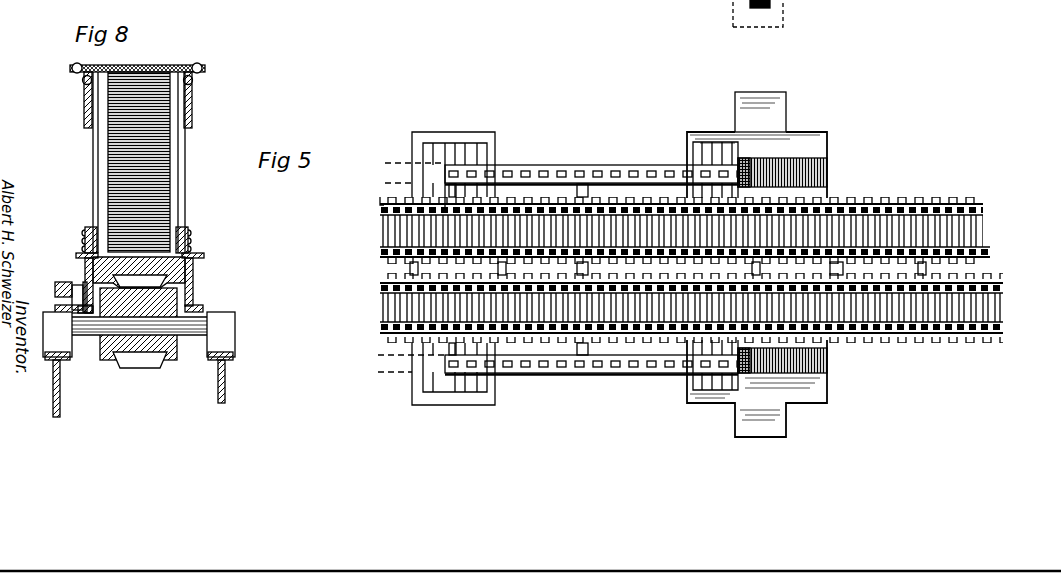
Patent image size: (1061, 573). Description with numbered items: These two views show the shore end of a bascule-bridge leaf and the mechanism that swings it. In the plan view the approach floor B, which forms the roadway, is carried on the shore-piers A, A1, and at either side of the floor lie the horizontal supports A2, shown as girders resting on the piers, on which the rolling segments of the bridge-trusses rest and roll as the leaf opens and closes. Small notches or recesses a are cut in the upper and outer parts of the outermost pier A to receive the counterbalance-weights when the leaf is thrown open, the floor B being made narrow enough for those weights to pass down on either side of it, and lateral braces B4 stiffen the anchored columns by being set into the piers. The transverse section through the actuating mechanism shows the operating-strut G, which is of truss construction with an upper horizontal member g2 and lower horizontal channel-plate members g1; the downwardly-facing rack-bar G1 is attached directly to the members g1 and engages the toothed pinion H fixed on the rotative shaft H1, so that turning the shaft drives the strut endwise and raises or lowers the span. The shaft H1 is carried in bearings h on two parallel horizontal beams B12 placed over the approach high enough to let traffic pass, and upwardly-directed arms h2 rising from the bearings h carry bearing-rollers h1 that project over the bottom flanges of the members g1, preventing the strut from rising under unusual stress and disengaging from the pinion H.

In FIG. 8, the upper horizontal member g2 is at (190, 64).
In FIG. 8, the operating-strut G is at (151, 162).
In FIG. 8, the lower horizontal members g1 is at (84, 252).
In FIG. 8, the rack-bar G1 is at (198, 265).
In FIG. 8, the bearing-rollers h1 is at (78, 284).
In FIG. 8, the upwardly-directed arms h2 is at (58, 292).
In FIG. 8, the rotative shaft H1 is at (200, 320).
In FIG. 8, the bearings h is at (236, 320).
In FIG. 8, the toothed pinion H is at (180, 338).
In FIG. 8, the horizontal beams B12 is at (220, 382).
In FIG. 5, the shore-pier A1 is at (450, 132).
In FIG. 5, the horizontal supports A2 is at (548, 165).
In FIG. 5, the shore-pier A is at (793, 132).
In FIG. 5, the notches or recesses a is at (808, 170).
In FIG. 5, the approach floor B is at (691, 256).
In FIG. 5, the lateral braces B4 is at (740, 4).